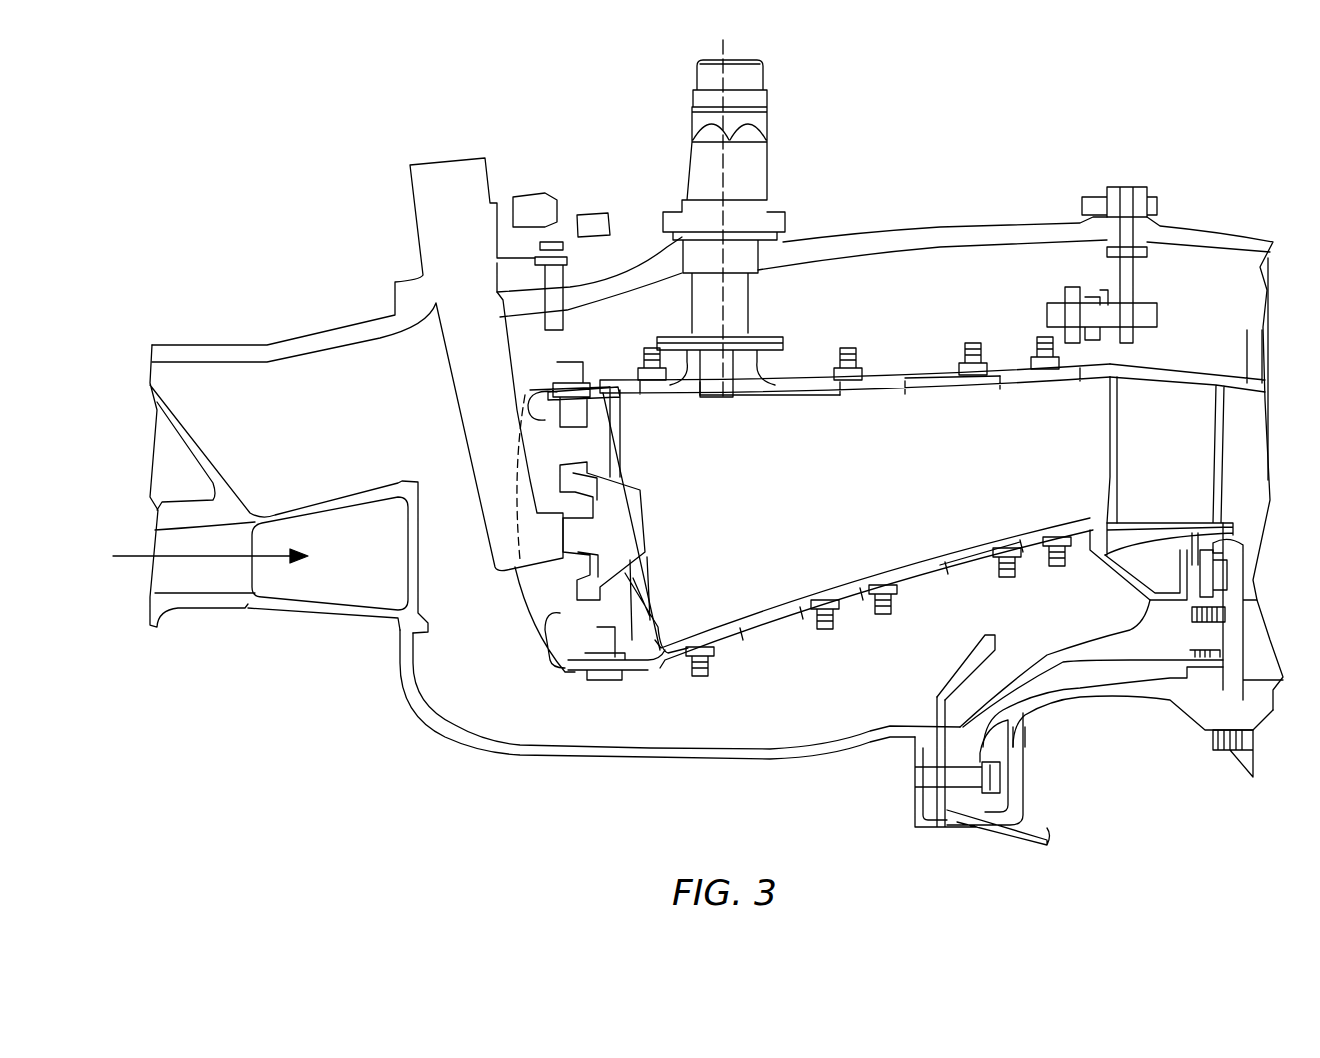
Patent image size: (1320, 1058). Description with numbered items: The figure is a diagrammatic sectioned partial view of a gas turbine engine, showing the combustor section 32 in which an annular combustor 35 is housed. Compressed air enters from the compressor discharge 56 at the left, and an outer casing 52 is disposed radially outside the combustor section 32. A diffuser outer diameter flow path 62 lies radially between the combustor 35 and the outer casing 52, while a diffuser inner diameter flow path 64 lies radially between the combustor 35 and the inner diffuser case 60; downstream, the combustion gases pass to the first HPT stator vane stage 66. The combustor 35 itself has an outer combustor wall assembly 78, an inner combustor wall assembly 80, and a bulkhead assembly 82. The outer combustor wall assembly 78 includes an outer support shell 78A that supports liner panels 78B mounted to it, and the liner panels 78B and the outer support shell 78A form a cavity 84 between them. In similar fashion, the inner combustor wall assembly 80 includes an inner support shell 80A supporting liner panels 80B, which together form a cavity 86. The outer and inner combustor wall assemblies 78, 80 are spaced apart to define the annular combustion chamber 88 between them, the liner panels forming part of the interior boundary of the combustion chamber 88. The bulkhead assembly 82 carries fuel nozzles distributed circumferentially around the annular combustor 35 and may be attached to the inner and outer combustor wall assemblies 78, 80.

The combustor section 32 is at (835, 112).
The combustor 35 is at (935, 275).
The outer casing 52 is at (848, 232).
The compressor discharge 56 is at (371, 571).
The inner diffuser case 60 is at (618, 762).
The diffuser outer diameter (OD) flow path 62 is at (841, 309).
The diffuser inner diameter (ID) flow path 64 is at (786, 706).
The first HPT stator vane stage 66 is at (1186, 464).
The outer combustor wall assembly 78 is at (855, 351).
The outer support shell 78A is at (905, 395).
The liner panels 78B is at (928, 373).
The inner combustor wall assembly 80 is at (936, 591).
The inner support shell 80A is at (965, 530).
The liner panels 80B is at (960, 573).
The bulkhead assembly 82 is at (530, 607).
The cavity 84 is at (935, 385).
The cavity 86 is at (760, 620).
The annular combustion chamber 88 is at (821, 484).